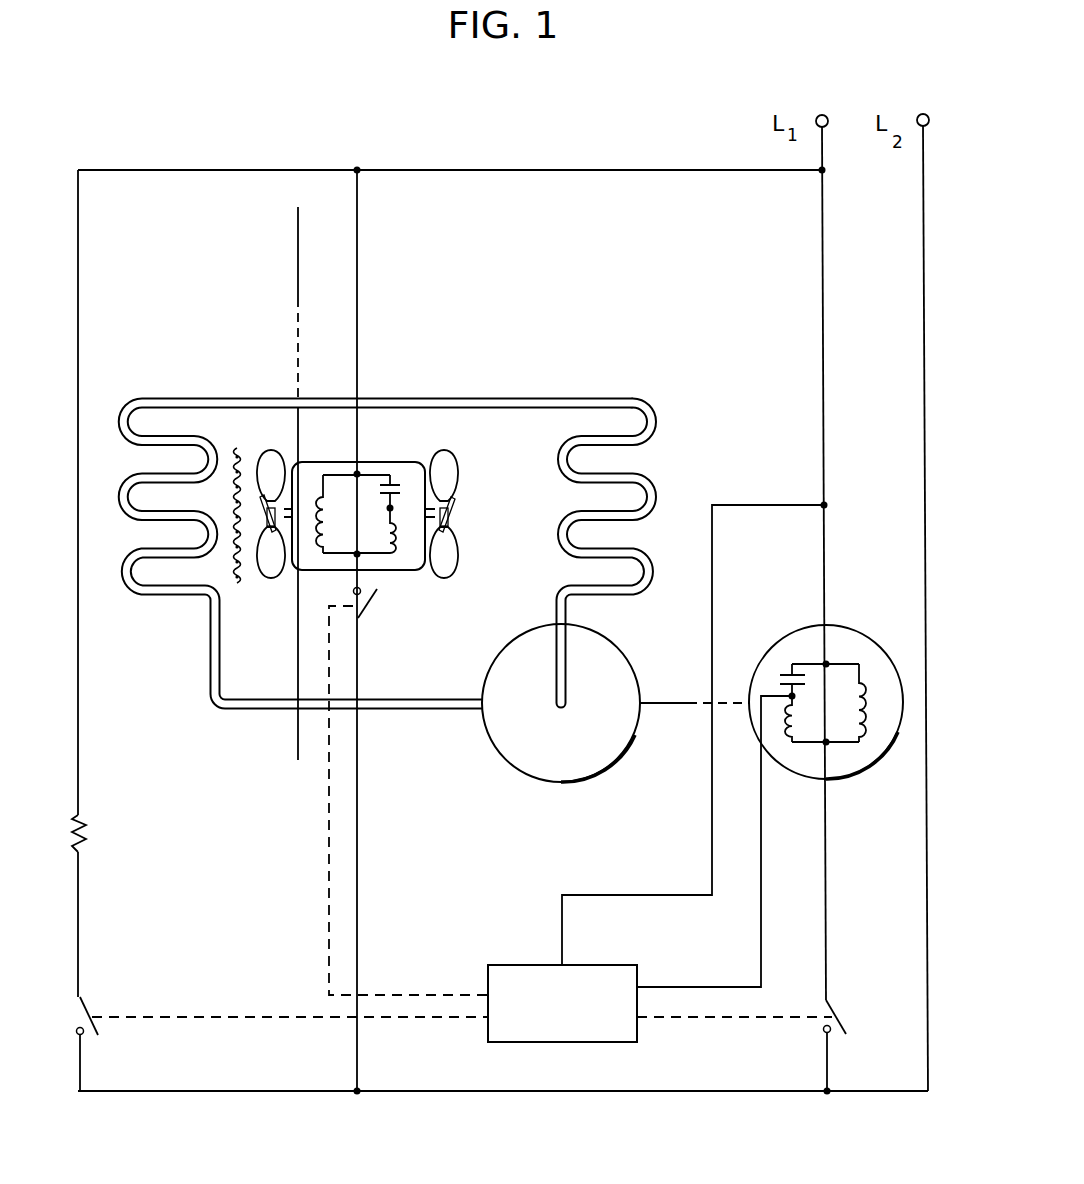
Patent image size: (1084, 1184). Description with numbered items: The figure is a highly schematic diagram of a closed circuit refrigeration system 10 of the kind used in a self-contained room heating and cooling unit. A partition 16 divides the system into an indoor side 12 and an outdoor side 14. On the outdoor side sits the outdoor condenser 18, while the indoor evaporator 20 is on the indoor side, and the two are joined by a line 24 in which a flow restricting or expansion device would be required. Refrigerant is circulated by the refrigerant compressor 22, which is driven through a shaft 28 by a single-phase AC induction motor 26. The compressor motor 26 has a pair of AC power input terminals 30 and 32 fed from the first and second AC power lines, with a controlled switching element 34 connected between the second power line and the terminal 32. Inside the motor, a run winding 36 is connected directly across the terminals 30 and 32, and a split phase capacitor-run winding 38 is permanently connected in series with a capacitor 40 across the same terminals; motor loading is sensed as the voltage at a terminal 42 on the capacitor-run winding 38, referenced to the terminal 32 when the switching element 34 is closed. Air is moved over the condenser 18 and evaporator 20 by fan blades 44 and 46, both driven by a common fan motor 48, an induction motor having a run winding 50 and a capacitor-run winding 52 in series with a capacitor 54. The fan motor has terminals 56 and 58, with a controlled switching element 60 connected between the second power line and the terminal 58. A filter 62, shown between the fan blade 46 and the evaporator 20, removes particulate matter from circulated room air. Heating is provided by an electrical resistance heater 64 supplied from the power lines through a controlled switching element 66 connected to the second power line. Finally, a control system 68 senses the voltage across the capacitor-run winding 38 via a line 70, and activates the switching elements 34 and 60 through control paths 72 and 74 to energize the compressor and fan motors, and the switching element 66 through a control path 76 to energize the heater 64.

The closed circuit refrigeration system 10 is at (618, 335).
The indoor side 12 is at (216, 301).
The outdoor side 14 is at (459, 301).
The partition 16 is at (298, 298).
The outdoor condenser 18 is at (652, 478).
The indoor evaporator 20 is at (134, 397).
The refrigerant compressor 22 is at (620, 650).
The line 24 is at (416, 397).
The single-phase AC induction motor 26 is at (858, 632).
The shaft 28 is at (654, 706).
The AC power input terminal 30 is at (825, 662).
The AC power input terminal 32 is at (826, 743).
The controlled switching element 34 is at (845, 997).
The run winding 36 is at (860, 687).
The split phase capacitor-run winding 38 is at (789, 735).
The capacitor 40 is at (785, 671).
The terminal 42 is at (790, 695).
The fan blade 44 is at (272, 462).
The fan blade 46 is at (452, 470).
The fan motor 48 is at (381, 462).
The run winding 50 is at (325, 515).
The capacitor-run winding 52 is at (386, 530).
The capacitor 54 is at (403, 485).
The terminal 56 is at (357, 474).
The terminal 58 is at (357, 556).
The controlled switching element 60 is at (380, 605).
The filter 62 is at (237, 585).
The electrical resistance heater 64 is at (85, 823).
The controlled switching element 66 is at (93, 1003).
The control system 68 is at (490, 965).
The line 70 is at (725, 987).
The control path 72 is at (790, 1017).
The control path 74 is at (329, 790).
The control path 76 is at (270, 1017).